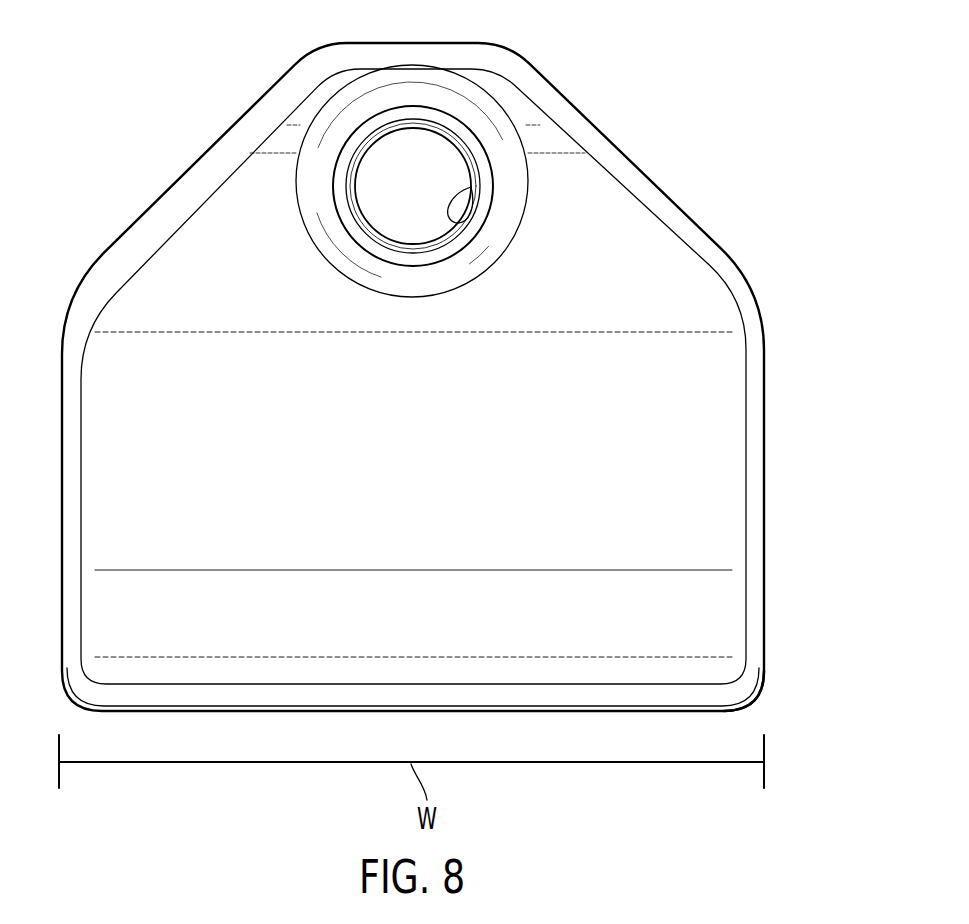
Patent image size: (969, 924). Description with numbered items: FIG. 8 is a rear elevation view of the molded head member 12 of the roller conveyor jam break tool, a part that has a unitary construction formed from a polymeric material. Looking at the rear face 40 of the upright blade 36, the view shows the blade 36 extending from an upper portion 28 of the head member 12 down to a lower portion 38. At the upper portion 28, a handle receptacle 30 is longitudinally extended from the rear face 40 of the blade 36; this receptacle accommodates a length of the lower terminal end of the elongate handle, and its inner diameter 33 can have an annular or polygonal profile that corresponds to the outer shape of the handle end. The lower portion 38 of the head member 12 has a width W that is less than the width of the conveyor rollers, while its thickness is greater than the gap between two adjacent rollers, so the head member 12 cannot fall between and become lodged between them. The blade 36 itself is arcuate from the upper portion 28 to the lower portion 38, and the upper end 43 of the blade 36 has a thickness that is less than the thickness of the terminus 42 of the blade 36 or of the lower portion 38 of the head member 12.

The molded head member 12 is at (138, 170).
The upper portion 28 is at (730, 102).
The handle receptacle 30 is at (429, 108).
The inner diameter 33 is at (458, 223).
The blade 36 is at (764, 447).
The lower portion 38 is at (792, 695).
The rear face 40 is at (430, 426).
The terminus 42 is at (241, 713).
The upper end 43 is at (320, 88).